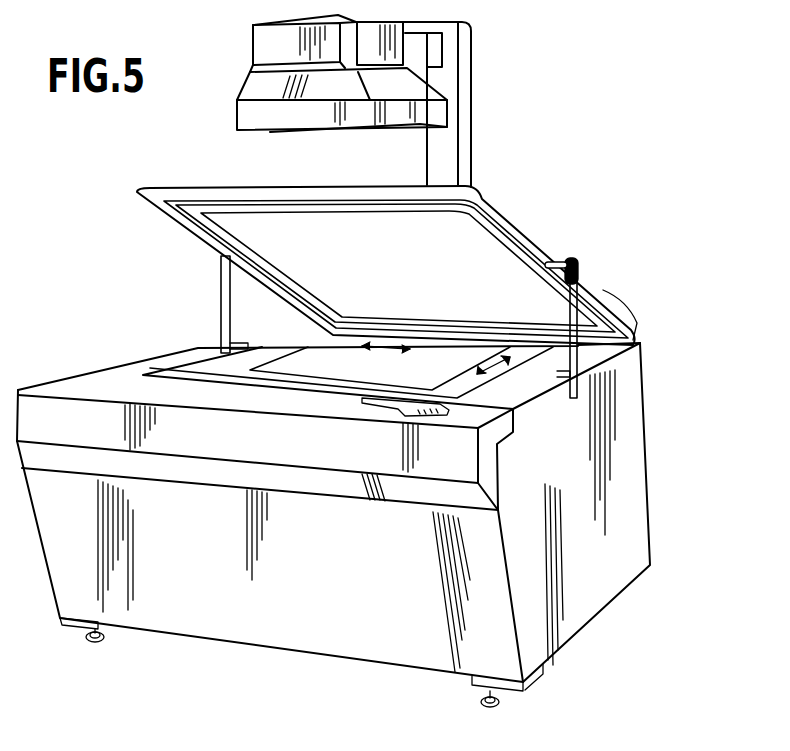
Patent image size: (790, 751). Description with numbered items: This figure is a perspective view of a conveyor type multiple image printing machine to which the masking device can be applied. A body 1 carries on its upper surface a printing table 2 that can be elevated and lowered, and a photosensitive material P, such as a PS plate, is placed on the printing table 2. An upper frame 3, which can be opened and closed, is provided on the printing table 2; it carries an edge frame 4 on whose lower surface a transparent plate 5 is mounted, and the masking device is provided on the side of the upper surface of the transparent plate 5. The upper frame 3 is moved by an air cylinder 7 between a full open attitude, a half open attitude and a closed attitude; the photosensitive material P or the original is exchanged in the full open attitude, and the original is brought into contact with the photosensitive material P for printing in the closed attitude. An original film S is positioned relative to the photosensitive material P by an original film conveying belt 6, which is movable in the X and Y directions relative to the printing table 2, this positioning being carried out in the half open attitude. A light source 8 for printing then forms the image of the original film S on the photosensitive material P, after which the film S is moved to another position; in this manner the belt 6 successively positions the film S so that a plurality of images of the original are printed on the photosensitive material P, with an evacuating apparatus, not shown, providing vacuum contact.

The body 1 is at (638, 513).
The printing table 2 is at (257, 352).
The upper frame 3 is at (387, 250).
The edge frame 4 is at (487, 214).
The transparent plate 5 is at (386, 252).
The original film conveying belt 6 is at (307, 379).
The air cylinder 7 is at (218, 290).
The light source 8 is at (298, 118).
The X direction X is at (398, 348).
The Y direction Y is at (480, 370).
The photosensitive material P is at (443, 350).
The original film S is at (424, 376).